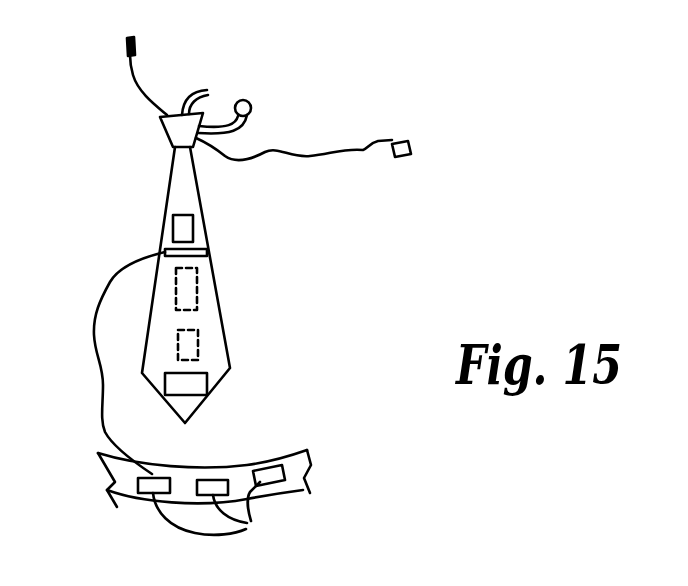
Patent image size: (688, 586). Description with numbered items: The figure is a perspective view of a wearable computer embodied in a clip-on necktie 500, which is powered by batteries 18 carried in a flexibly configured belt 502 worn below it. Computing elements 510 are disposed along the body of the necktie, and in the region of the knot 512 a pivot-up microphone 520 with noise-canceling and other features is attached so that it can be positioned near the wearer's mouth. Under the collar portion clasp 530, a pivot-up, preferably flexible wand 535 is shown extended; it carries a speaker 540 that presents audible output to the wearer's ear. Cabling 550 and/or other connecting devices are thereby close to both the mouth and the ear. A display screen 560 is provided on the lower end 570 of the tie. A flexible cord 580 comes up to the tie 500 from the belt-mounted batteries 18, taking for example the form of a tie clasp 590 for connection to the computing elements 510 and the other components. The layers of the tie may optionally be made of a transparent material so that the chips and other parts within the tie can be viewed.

The clip-on necktie 500 is at (126, 233).
The flexibly configured belt 502 is at (275, 455).
The computing elements 510 is at (196, 345).
The knot 512 is at (162, 144).
The pivot-up microphone 520 is at (254, 130).
The collar portion clasp 530 is at (207, 91).
The flexible wand 535 is at (131, 73).
The speaker 540 is at (135, 43).
The cabling 550 is at (373, 142).
The display screen 560 is at (207, 380).
The lower end of the tie 570 is at (170, 412).
The flexible cord 580 is at (117, 280).
The tie clasp 590 is at (207, 252).
The batteries 18 is at (219, 514).